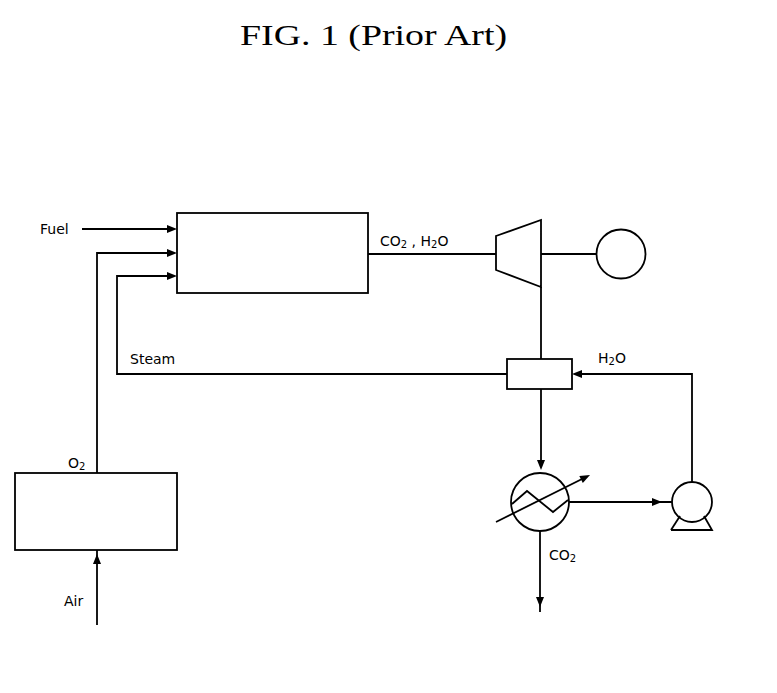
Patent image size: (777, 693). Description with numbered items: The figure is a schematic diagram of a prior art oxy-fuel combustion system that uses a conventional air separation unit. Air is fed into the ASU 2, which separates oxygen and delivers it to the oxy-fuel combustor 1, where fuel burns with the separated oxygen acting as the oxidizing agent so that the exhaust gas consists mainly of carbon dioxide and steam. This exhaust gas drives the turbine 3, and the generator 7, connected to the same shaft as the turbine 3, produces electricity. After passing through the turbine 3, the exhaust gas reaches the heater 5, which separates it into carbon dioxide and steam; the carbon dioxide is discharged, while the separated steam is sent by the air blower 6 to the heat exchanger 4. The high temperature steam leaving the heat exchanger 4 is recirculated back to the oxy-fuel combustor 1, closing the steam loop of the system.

The oxy-fuel combustor 1 is at (269, 213).
The ASU 2 is at (178, 510).
The turbine 3 is at (518, 228).
The heat exchanger 4 is at (515, 358).
The heater 5 is at (516, 488).
The air blower 6 is at (691, 534).
The generator 7 is at (640, 232).